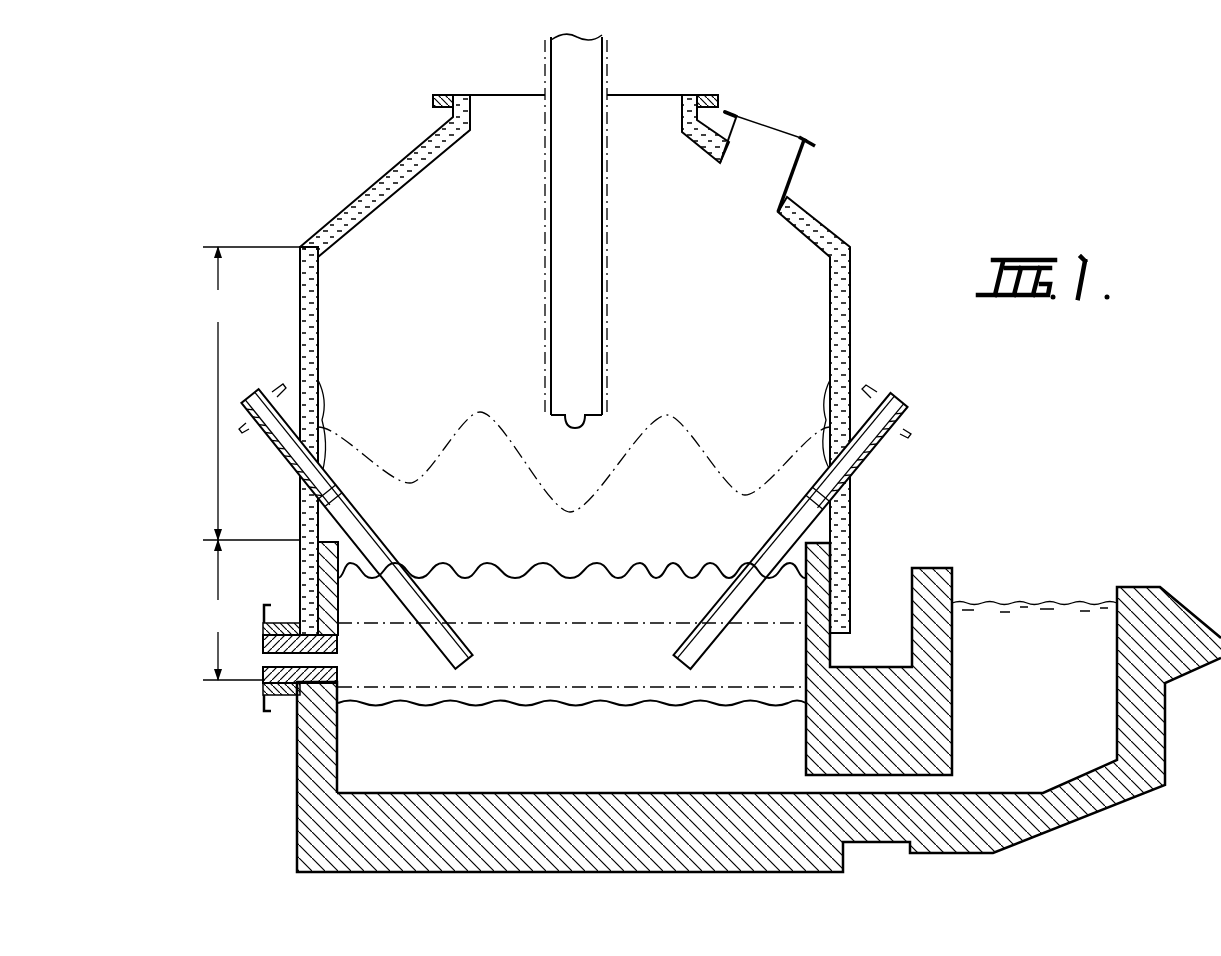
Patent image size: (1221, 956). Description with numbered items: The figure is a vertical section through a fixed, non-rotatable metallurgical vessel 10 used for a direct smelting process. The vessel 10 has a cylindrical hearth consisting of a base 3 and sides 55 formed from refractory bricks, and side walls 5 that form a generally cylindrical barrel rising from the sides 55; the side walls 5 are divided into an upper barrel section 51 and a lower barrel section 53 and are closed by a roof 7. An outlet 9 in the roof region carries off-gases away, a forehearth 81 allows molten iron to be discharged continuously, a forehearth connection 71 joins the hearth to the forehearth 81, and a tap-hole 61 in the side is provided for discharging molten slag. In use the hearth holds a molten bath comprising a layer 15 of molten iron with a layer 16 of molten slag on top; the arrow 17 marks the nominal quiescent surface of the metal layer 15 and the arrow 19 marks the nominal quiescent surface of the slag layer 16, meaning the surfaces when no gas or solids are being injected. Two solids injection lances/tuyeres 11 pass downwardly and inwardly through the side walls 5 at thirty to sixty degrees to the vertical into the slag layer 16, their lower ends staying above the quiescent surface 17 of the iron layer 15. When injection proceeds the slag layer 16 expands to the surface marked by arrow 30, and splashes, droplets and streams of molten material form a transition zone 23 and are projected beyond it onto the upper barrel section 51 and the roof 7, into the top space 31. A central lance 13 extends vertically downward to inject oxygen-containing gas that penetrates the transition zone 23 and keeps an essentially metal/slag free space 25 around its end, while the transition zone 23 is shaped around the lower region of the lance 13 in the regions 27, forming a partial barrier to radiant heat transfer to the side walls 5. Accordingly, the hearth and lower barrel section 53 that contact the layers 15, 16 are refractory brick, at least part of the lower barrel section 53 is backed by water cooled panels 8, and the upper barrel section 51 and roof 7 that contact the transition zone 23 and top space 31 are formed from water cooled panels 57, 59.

The base 3 is at (330, 826).
The side walls 5 is at (300, 505).
The roof 7 is at (385, 178).
The water cooled panels 8 is at (300, 585).
The outlet 9 is at (797, 166).
The furnace 10 is at (308, 218).
The solids injection lances/tuyeres 11 is at (258, 396).
The lance 13 is at (603, 182).
The layer of molten iron 15 is at (560, 764).
The layer of molten slag 16 is at (568, 667).
The quiescent surface of the metal layer 17 is at (722, 688).
The quiescent surface of the slag layer 19 is at (507, 620).
The transition zone 23 is at (732, 495).
The metal/slag free space 25 is at (540, 455).
The shaped region of the transition zone 27 is at (470, 445).
The surface of the expanded slag layer 30 is at (722, 567).
The top space 31 is at (695, 294).
The upper barrel section 51 is at (251, 393).
The lower barrel section 53 is at (234, 610).
The sides of the hearth 55 is at (322, 732).
The water cooled panels 57 is at (320, 318).
The water cooled panels 59 is at (380, 207).
The tap-hole 61 is at (265, 672).
The forehearth connection 71 is at (868, 785).
The forehearth 81 is at (1018, 766).